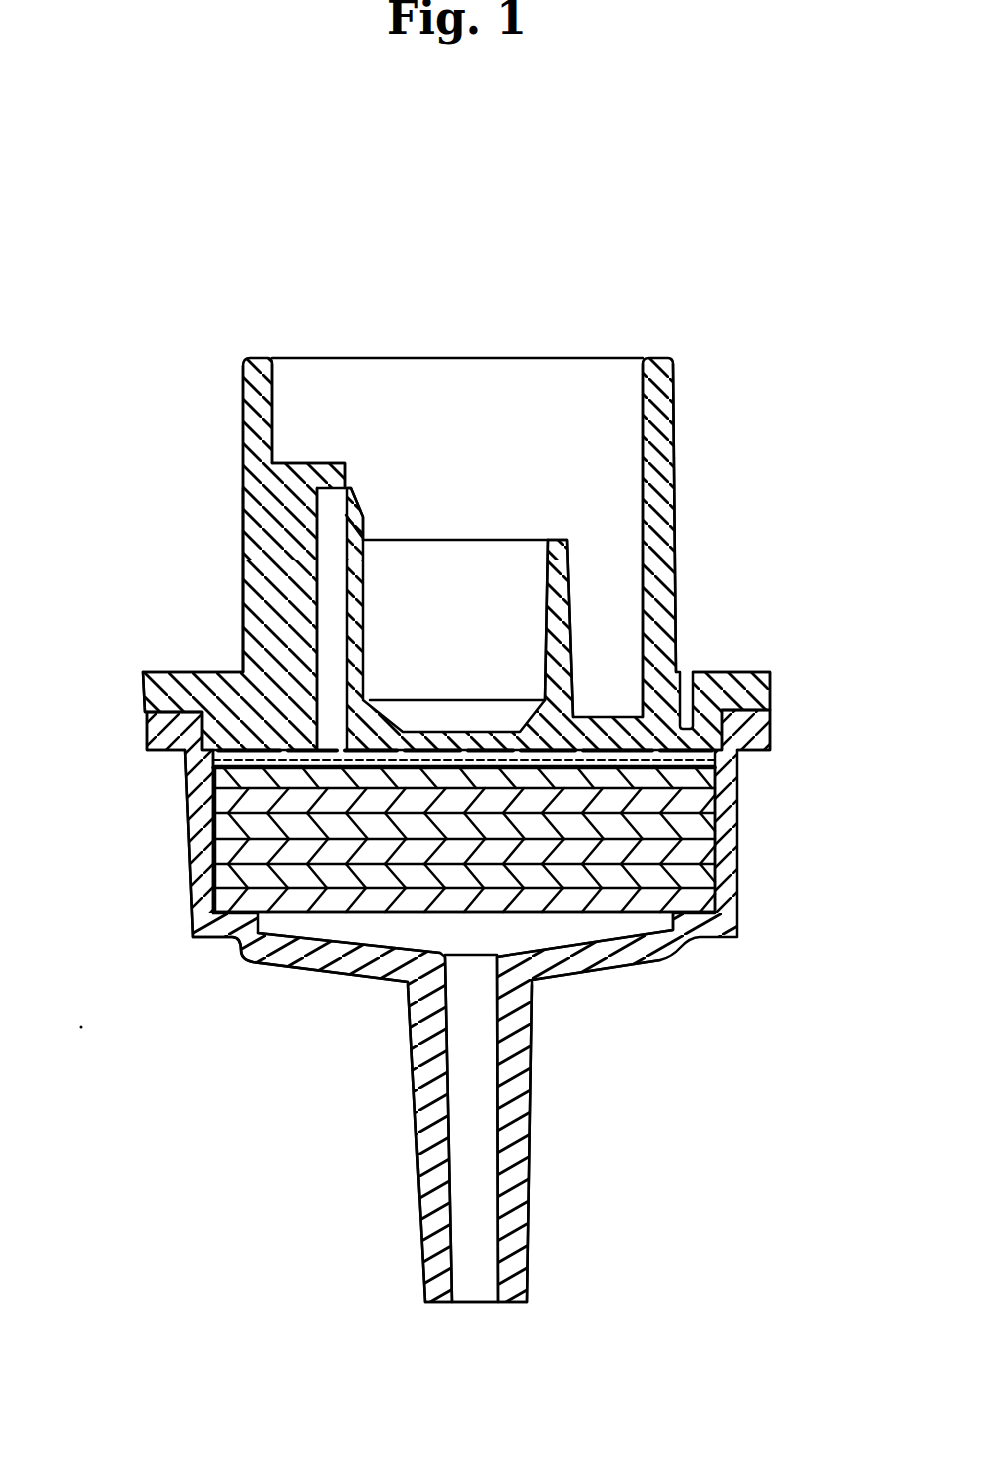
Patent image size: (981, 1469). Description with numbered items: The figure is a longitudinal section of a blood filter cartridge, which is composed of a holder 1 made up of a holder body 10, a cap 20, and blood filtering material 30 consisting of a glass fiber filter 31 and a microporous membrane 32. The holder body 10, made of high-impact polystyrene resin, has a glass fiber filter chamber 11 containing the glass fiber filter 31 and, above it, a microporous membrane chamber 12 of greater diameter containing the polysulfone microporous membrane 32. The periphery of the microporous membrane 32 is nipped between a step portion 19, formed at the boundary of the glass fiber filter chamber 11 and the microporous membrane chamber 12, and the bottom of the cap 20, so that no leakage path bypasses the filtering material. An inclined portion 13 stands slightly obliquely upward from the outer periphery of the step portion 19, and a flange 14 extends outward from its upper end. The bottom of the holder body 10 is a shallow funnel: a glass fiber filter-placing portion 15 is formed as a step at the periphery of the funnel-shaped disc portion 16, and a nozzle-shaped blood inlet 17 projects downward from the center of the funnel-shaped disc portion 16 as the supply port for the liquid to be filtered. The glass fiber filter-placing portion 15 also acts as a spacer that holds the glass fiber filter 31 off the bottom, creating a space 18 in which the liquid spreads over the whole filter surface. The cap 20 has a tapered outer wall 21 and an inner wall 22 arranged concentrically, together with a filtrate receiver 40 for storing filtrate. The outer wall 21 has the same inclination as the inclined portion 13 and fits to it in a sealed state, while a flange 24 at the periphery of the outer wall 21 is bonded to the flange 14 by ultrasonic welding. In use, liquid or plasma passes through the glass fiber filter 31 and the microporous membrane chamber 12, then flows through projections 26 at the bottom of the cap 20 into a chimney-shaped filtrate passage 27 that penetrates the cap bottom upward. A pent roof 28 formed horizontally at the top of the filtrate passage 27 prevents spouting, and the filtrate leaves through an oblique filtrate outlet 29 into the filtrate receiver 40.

The holder 1 is at (130, 393).
The holder body 10 is at (792, 872).
The glass fiber filter chamber 11 is at (710, 822).
The microporous membrane chamber 12 is at (722, 762).
The inclined portion 13 is at (152, 722).
The flange 14 is at (770, 718).
The glass fiber filter-placing portion 15 is at (206, 941).
The funnel-shaped disc portion 16 is at (330, 963).
The nozzle-shaped blood inlet 17 is at (532, 1098).
The space 18 is at (616, 928).
The step portion 19 is at (187, 778).
The cap 20 is at (737, 436).
The outer wall 21 is at (193, 673).
The inner wall 22 is at (245, 370).
The flange 24 is at (143, 681).
The projections 26 is at (587, 748).
The chimney-shaped filtrate passage 27 is at (320, 548).
The pent roof 28 is at (330, 463).
The filtrate outlet 29 is at (353, 495).
The blood filtering material 30 is at (206, 852).
The glass fiber filter 31 is at (220, 904).
The microporous membrane 32 is at (203, 819).
The filtrate receiver 40 is at (510, 577).